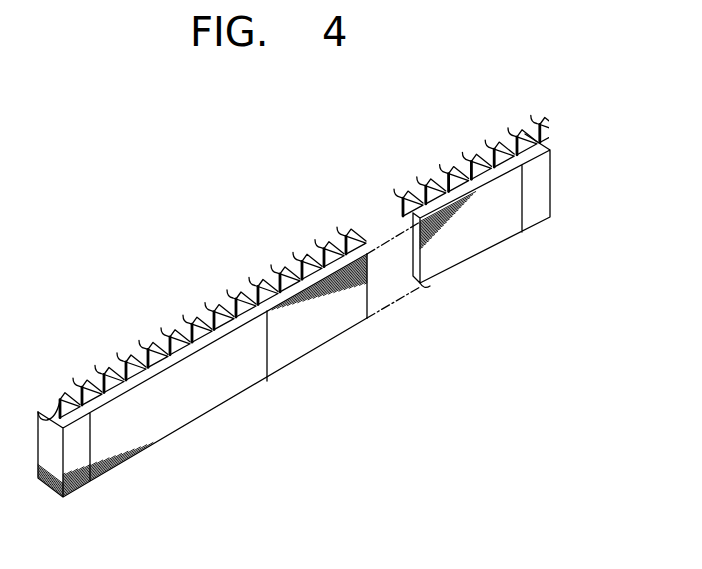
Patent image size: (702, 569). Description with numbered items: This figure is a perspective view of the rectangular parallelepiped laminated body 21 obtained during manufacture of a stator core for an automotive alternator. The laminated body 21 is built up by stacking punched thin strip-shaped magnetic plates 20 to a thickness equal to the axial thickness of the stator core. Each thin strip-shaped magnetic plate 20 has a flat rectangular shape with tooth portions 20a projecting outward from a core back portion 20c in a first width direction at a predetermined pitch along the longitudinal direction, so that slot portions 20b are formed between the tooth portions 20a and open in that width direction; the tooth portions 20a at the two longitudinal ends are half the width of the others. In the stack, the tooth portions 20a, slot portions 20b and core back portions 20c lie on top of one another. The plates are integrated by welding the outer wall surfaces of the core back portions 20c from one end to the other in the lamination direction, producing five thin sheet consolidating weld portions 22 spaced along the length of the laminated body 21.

The thin strip-shaped magnetic plate 20 is at (326, 307).
The tooth portion 20a is at (460, 174).
The slot portion 20b is at (418, 198).
The core back portion 20c is at (328, 248).
The laminated body 21 is at (93, 278).
The thin sheet consolidating weld portion 22 is at (268, 345).